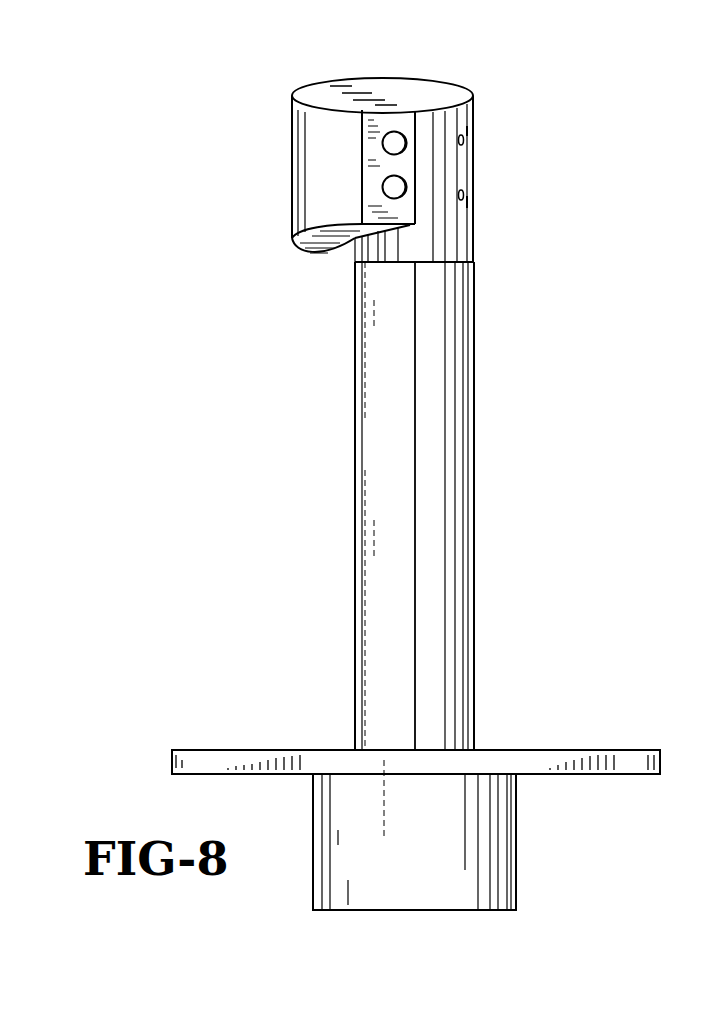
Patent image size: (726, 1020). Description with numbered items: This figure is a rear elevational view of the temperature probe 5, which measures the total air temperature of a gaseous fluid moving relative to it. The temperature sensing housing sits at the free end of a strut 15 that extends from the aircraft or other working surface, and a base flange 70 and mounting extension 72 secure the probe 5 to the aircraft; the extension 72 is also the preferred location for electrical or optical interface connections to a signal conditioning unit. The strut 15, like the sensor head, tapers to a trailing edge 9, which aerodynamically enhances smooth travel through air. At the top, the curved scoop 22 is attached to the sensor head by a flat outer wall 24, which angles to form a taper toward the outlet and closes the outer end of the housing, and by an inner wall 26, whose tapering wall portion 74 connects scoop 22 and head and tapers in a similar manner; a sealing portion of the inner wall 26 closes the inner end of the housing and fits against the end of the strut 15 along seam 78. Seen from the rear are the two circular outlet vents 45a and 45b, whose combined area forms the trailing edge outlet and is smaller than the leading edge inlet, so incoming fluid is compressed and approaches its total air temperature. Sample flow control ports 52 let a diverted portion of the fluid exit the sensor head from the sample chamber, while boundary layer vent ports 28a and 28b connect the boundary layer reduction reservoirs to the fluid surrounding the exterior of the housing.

The temperature probe 5 is at (272, 372).
The trailing edge 9 is at (413, 587).
The strut 15 is at (364, 531).
The curved scoop 22 is at (302, 122).
The outer wall 24 is at (318, 93).
The inner wall 26 is at (297, 251).
The boundary layer vent ports 28a is at (464, 140).
The boundary layer vent ports 28b is at (412, 90).
The outlet vent 45a is at (393, 145).
The outlet vent 45b is at (393, 188).
The sample flow control ports 52 is at (469, 132).
The base flange 70 is at (612, 750).
The mounting extension 72 is at (502, 847).
The tapering wall portion 74 is at (340, 253).
The seam 78 is at (450, 264).